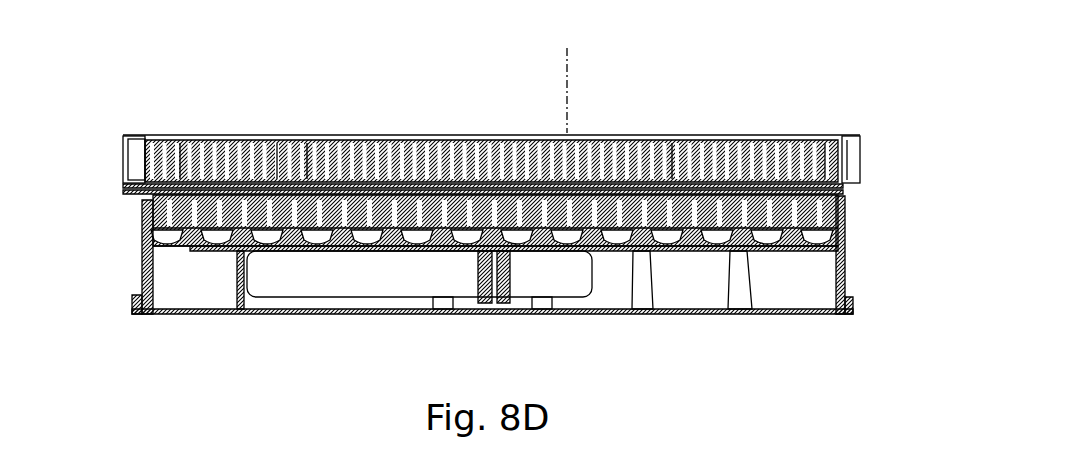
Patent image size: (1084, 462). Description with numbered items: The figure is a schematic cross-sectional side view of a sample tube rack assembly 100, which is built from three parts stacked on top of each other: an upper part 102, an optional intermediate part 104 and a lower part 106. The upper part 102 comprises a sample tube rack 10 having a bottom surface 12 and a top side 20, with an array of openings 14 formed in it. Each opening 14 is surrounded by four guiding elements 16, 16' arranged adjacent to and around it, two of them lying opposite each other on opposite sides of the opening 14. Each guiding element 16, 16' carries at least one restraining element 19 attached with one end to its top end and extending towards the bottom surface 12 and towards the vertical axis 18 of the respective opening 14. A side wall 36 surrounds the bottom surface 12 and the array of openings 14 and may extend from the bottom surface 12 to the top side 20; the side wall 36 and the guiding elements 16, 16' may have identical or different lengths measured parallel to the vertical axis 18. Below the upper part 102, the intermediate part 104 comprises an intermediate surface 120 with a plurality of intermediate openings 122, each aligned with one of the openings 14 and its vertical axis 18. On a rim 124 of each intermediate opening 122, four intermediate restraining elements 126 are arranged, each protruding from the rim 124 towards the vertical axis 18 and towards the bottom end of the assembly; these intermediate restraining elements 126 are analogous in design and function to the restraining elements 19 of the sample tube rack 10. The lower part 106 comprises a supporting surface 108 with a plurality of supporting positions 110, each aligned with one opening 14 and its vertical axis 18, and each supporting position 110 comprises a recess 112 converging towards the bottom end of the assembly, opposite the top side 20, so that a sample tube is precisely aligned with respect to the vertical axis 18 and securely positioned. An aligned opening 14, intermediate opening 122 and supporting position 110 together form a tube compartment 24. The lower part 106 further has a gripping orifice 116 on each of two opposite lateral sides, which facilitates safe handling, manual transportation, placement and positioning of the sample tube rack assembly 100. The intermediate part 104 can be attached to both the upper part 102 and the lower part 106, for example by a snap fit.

The sample tube rack 10 is at (455, 124).
The bottom surface 12 is at (173, 191).
The opening 14 is at (843, 186).
The guiding element 16 is at (491, 114).
The guiding element 16' is at (856, 100).
The vertical axis 18 is at (563, 81).
The restraining element 19 is at (277, 140).
The top side 20 is at (672, 124).
The tube compartment 24 is at (182, 125).
The side wall 36 is at (860, 158).
The sample tube rack assembly 100 is at (719, 103).
The upper part 102 is at (114, 157).
The intermediate part 104 is at (129, 210).
The lower part 106 is at (126, 277).
The supporting surface 108 is at (143, 246).
The supporting position 110 is at (168, 260).
The recess 112 is at (185, 251).
The gripping orifice 116 is at (355, 277).
The intermediate surface 120 is at (845, 237).
The intermediate opening 122 is at (845, 202).
The rim 124 is at (217, 197).
The intermediate restraining element 126 is at (727, 212).